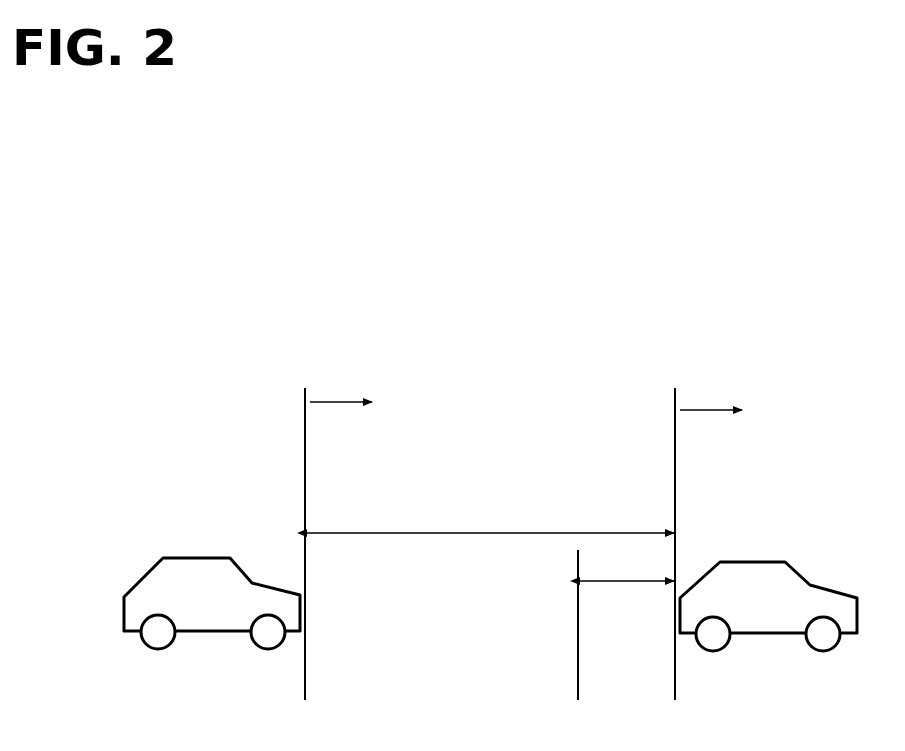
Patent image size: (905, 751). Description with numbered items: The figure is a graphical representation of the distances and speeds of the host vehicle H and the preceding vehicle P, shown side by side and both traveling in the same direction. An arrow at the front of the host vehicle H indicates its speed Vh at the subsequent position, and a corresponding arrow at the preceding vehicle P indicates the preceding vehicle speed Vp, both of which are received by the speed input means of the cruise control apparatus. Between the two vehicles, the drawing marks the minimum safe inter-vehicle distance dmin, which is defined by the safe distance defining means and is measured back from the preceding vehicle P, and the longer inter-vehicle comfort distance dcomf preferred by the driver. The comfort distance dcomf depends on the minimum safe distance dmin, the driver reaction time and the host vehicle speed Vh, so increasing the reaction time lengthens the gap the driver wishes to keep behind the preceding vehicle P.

The host vehicle H is at (187, 558).
The preceding vehicle P is at (740, 561).
The host vehicle speed Vh is at (343, 381).
The preceding vehicle speed Vp is at (714, 390).
The inter-vehicle comfort distance dcomf is at (490, 516).
The minimum safe inter-vehicle distance dmin is at (626, 564).